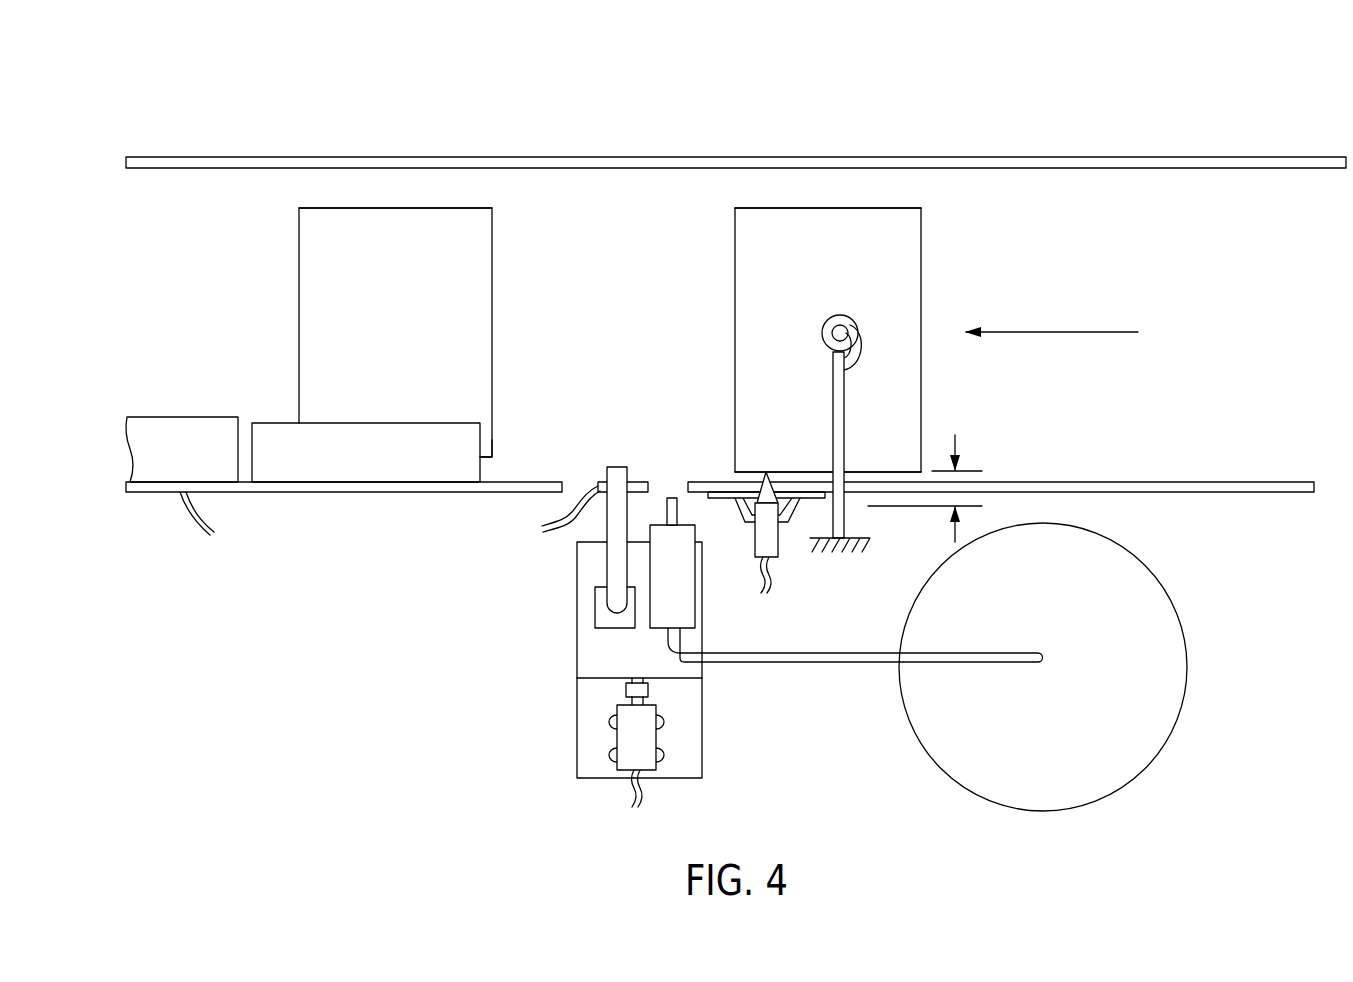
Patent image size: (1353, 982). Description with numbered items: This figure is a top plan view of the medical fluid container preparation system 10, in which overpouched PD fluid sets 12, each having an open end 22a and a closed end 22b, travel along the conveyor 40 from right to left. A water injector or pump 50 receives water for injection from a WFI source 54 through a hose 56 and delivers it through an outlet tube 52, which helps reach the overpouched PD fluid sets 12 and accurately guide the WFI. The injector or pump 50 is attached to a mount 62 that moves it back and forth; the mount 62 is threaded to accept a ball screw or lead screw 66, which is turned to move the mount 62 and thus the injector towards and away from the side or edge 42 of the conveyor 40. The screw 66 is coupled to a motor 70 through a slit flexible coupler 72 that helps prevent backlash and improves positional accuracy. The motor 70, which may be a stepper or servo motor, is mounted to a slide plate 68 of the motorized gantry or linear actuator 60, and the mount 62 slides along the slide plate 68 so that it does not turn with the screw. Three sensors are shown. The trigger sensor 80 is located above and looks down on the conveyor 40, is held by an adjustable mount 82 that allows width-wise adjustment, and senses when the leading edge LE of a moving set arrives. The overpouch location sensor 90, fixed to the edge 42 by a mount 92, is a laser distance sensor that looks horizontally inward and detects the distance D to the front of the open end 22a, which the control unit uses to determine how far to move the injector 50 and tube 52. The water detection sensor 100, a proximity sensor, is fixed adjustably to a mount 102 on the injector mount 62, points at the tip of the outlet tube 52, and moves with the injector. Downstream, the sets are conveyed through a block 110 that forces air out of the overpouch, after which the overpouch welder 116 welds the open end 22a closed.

The system 10 is at (1034, 103).
The overpouched PD fluid set 12 is at (492, 208).
The open end 22a is at (483, 460).
The closed end 22b is at (442, 208).
The conveyor 40 is at (1247, 314).
The side or edge of conveyor 42 is at (1209, 492).
The water injector or pump 50 is at (685, 590).
The tube 52 is at (670, 498).
The WFI source 54 is at (1077, 602).
The hose 56 is at (995, 653).
The motorized gantry or linear actuator 60 is at (628, 635).
The mount 62 is at (587, 660).
The ball screw or lead screw 66 is at (647, 682).
The slide plate 68 is at (683, 765).
The motor 70 is at (643, 738).
The coupler 72 is at (625, 688).
The trigger sensor 80 is at (832, 320).
The adjustable mount 82 is at (847, 388).
The overpouch location sensor 90 is at (752, 545).
The mount 92 is at (788, 510).
The water detection sensor 100 is at (598, 480).
The mount 102 is at (607, 568).
The block 110 is at (369, 468).
The overpouch welder 116 is at (197, 468).
The leading edge LE is at (735, 315).
The distance D is at (958, 437).